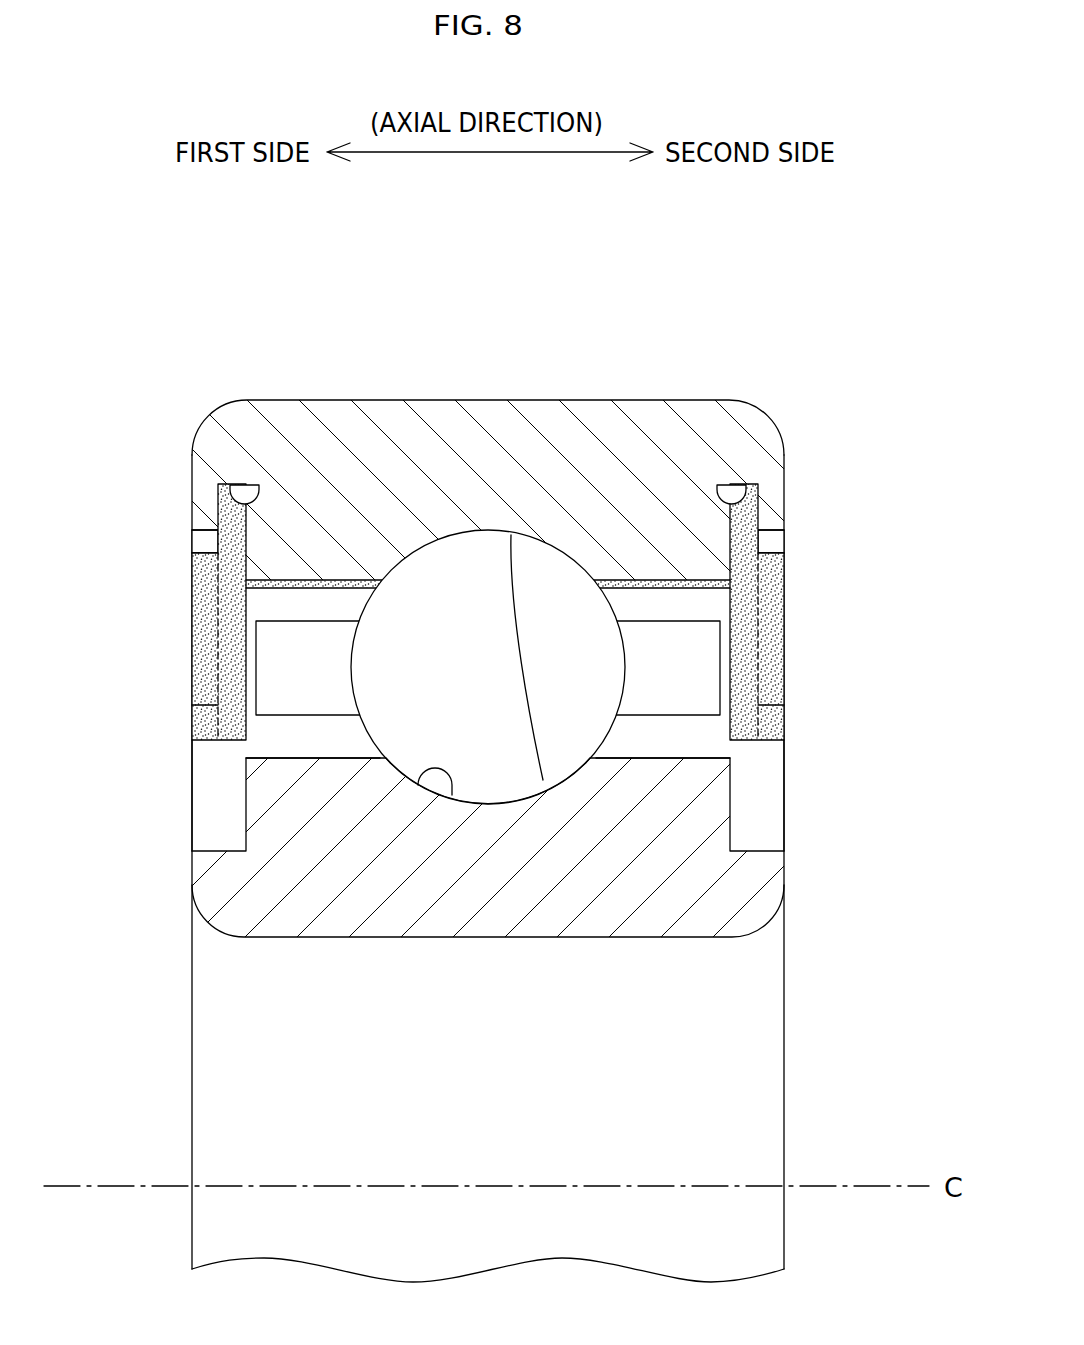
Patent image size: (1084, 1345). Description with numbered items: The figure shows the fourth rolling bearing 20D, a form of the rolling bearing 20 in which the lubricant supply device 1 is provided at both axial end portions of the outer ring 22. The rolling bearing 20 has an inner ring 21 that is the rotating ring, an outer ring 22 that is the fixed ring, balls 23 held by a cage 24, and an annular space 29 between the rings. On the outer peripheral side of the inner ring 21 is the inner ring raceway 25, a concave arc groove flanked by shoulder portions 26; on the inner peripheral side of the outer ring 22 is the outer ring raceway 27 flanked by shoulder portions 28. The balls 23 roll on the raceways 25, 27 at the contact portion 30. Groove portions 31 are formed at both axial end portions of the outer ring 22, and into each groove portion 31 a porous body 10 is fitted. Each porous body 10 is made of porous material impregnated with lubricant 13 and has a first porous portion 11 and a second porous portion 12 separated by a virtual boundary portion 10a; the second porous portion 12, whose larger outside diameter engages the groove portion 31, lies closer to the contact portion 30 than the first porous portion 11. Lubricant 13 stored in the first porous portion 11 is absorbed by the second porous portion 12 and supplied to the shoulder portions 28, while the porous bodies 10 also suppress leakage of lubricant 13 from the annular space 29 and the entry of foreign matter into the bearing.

The lubricant supply device 1 is at (213, 750).
The porous body 10 is at (491, 612).
The virtual boundary portion 10a is at (488, 718).
The first porous portion 11 is at (200, 650).
The second porous portion 12 is at (228, 602).
The lubricant 13 is at (351, 588).
The rolling bearing 20 is at (492, 667).
The fourth rolling bearing 20D is at (495, 355).
The inner ring 21 is at (735, 895).
The outer ring 22 is at (738, 443).
The ball 23 is at (479, 763).
The cage 24 is at (327, 697).
The inner ring raceway 25 is at (418, 785).
The shoulder portions 26 is at (308, 760).
The outer ring raceway 27 is at (543, 780).
The shoulder portions 28 is at (300, 588).
The annular space 29 is at (632, 764).
The contact portion 30 is at (488, 795).
The groove portion 31 is at (259, 489).